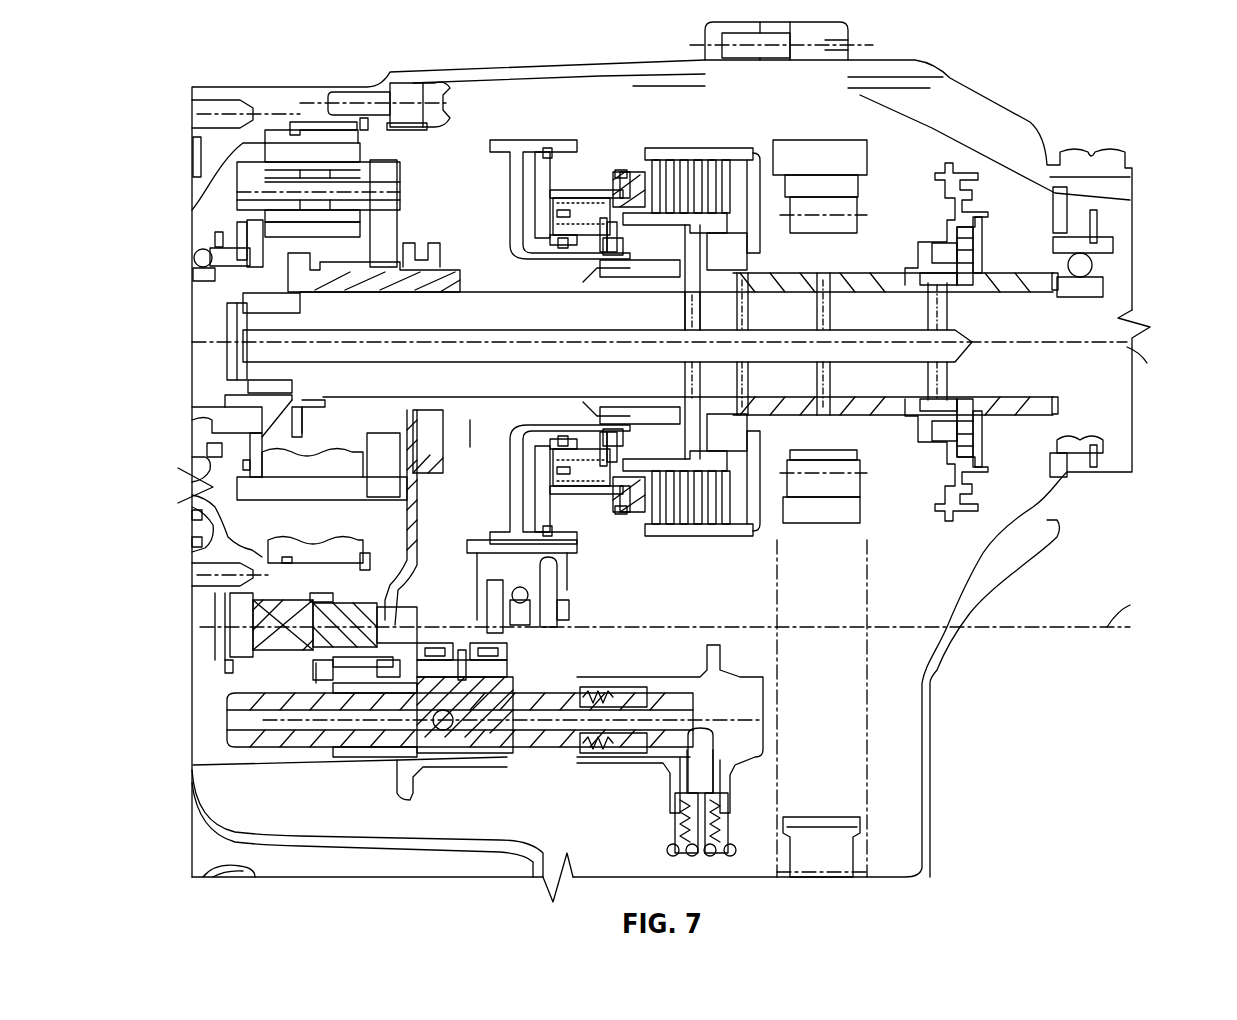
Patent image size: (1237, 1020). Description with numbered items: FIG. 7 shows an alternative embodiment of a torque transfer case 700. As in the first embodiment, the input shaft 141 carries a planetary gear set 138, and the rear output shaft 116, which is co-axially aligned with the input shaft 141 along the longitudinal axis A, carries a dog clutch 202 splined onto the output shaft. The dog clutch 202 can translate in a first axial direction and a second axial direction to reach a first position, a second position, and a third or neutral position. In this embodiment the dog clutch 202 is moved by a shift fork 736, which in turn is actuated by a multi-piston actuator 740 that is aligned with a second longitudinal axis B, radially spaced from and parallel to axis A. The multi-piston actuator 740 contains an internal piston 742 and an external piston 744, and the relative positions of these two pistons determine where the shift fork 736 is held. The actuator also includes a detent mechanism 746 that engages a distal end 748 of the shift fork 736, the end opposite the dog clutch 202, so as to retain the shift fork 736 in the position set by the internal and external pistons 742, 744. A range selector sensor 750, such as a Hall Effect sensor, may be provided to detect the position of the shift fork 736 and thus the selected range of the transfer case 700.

The torque transfer case 700 is at (1140, 75).
The planetary gear set 138 is at (215, 191).
The input shaft 141 is at (215, 323).
The dog clutch 202 is at (330, 272).
The rear output shaft 116 is at (460, 313).
The shift fork 736 is at (410, 527).
The external piston 744 is at (233, 603).
The internal piston 742 is at (240, 645).
The multi-piston actuator 740 is at (222, 657).
The range selector sensor 750 is at (577, 608).
The distal end 748 is at (550, 686).
The detent mechanism 746 is at (705, 724).